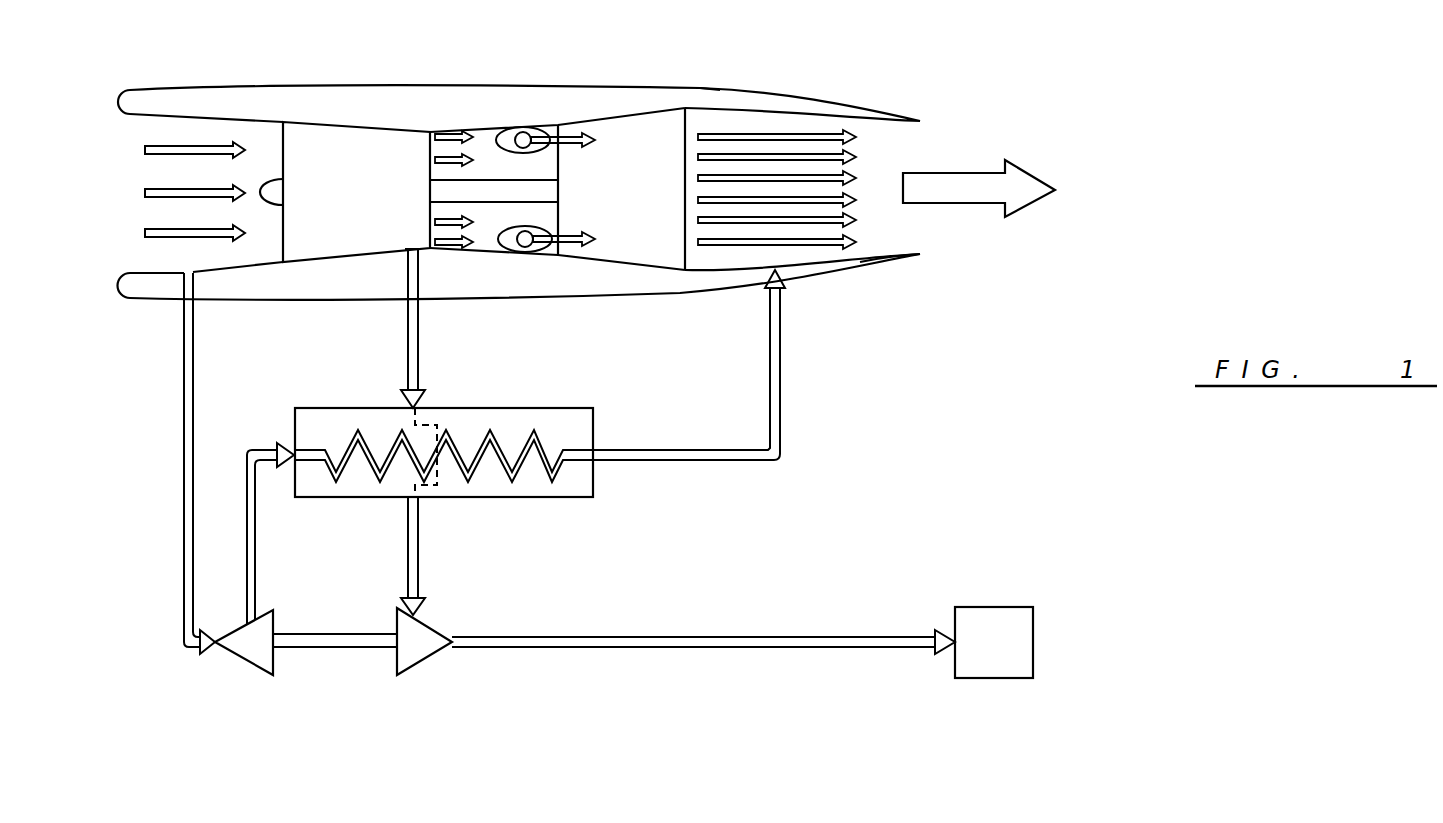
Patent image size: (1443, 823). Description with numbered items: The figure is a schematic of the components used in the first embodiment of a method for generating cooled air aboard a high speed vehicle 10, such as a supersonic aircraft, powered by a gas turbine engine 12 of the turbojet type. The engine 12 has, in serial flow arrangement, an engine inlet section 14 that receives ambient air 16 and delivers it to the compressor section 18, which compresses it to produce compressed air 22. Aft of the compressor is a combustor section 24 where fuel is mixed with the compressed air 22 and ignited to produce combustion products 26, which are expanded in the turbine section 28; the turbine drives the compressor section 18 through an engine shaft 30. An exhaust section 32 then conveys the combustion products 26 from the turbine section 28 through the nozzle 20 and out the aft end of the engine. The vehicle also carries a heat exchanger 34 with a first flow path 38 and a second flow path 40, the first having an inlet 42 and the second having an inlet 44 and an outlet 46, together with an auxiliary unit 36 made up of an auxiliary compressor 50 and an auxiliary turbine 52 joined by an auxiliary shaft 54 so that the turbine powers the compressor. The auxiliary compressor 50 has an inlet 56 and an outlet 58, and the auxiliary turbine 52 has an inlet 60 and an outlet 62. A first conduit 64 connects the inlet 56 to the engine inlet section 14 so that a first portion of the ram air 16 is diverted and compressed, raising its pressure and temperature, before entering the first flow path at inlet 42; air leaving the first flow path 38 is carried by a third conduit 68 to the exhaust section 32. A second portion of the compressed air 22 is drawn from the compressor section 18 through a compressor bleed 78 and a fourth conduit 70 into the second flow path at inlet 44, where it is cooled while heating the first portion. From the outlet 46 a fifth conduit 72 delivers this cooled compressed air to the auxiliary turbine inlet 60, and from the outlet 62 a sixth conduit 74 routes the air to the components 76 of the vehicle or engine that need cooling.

The high speed vehicle 10 is at (1160, 598).
The gas turbine engine 12 is at (550, 305).
The engine inlet section 14 is at (188, 128).
The ambient air 16 is at (148, 156).
The compressor section 18 is at (345, 140).
The nozzle 20 is at (922, 255).
The compressed air 22 is at (475, 158).
The combustor section 24 is at (523, 128).
The combustion products 26 is at (572, 130).
The turbine section 28 is at (640, 205).
The engine shaft 30 is at (486, 195).
The exhaust section 32 is at (768, 122).
The heat exchanger 34 is at (575, 490).
The auxiliary unit 36 is at (400, 703).
The first flow path 38 is at (370, 460).
The second flow path 40 is at (440, 422).
The inlet of first flow path 42 is at (293, 454).
The inlet of second flow path 44 is at (412, 406).
The outlet of second flow path 46 is at (420, 502).
The auxiliary compressor 50 is at (252, 670).
The auxiliary turbine 52 is at (423, 665).
The auxiliary shaft 54 is at (347, 648).
The auxiliary compressor inlet 56 is at (216, 648).
The auxiliary compressor outlet 58 is at (256, 616).
The auxiliary turbine inlet 60 is at (420, 618).
The auxiliary turbine outlet 62 is at (454, 643).
The first conduit 64 is at (184, 447).
The third conduit 68 is at (748, 448).
The fourth conduit 70 is at (408, 335).
The fifth conduit 72 is at (420, 555).
The sixth conduit 74 is at (800, 637).
The components to be cooled 76 is at (1020, 607).
The compressor bleed 78 is at (407, 255).